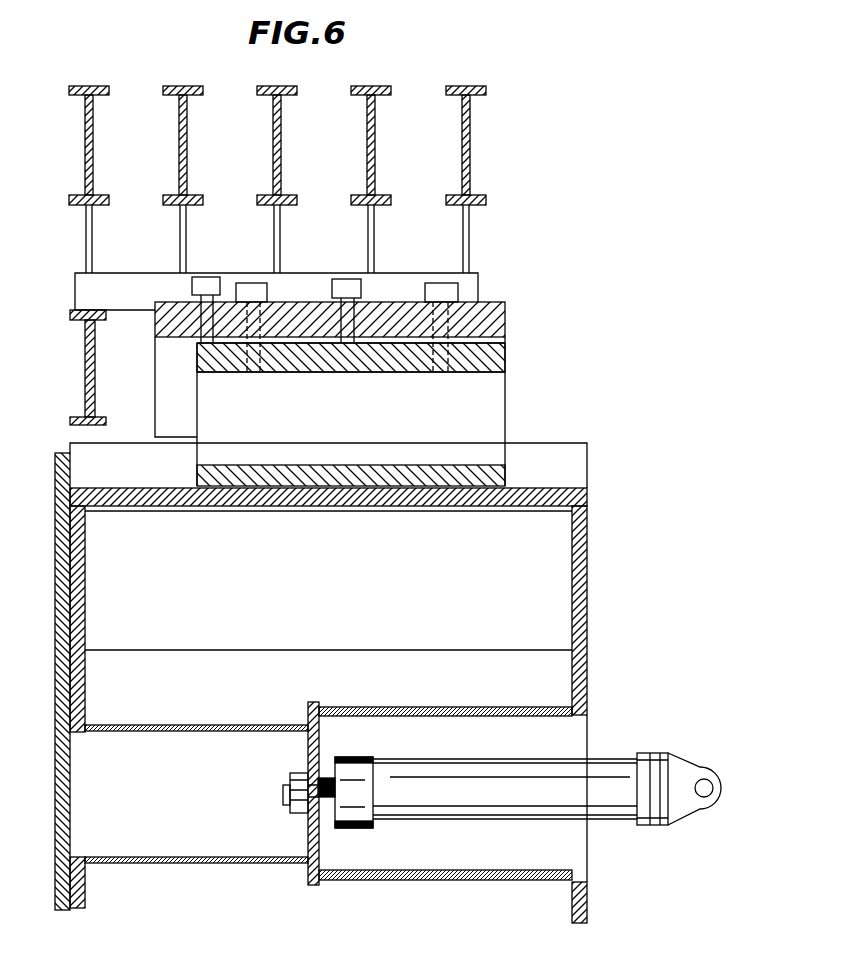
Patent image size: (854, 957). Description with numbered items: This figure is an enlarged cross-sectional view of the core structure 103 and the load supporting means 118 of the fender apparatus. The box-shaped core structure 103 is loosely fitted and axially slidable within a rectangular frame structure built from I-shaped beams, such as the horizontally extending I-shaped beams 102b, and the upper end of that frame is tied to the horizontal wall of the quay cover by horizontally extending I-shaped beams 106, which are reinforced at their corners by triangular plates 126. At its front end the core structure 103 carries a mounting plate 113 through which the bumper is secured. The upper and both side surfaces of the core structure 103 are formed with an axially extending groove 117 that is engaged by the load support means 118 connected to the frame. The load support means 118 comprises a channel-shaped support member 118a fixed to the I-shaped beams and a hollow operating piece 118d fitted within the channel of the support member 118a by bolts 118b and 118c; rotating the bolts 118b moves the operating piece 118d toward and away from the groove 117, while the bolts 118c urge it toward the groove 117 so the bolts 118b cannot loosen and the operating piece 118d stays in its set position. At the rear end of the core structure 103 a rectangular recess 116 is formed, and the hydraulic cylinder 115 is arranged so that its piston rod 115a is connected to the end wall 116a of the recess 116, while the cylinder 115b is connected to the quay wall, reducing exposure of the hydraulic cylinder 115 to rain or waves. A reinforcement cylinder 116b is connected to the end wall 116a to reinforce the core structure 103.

The I-shaped beam 106 is at (273, 135).
The triangular plate 126 is at (178, 240).
The channel-shaped support member 118a is at (447, 290).
The bolt 118c is at (208, 277).
The bolt 118b is at (248, 292).
The load support means 118 is at (517, 325).
The hollow operating piece 118d is at (490, 360).
The I-shaped beam 102b is at (82, 367).
The mounting plate 113 is at (56, 468).
The groove 117 is at (563, 455).
The core structure 103 is at (590, 542).
The rectangular recess 116 is at (462, 859).
The end wall 116a is at (320, 842).
The reinforcement cylinder 116b is at (203, 732).
The hydraulic cylinder 115 is at (617, 807).
The piston rod 115a is at (330, 777).
The cylinder 115b is at (497, 819).